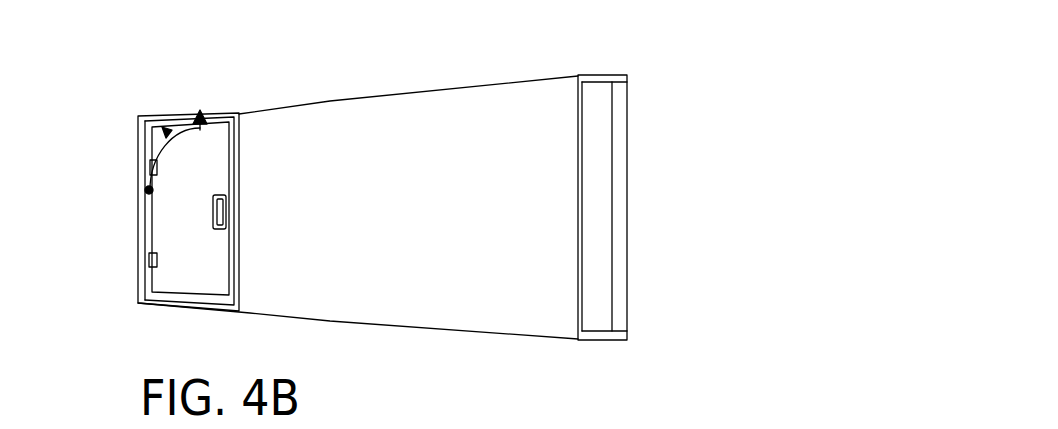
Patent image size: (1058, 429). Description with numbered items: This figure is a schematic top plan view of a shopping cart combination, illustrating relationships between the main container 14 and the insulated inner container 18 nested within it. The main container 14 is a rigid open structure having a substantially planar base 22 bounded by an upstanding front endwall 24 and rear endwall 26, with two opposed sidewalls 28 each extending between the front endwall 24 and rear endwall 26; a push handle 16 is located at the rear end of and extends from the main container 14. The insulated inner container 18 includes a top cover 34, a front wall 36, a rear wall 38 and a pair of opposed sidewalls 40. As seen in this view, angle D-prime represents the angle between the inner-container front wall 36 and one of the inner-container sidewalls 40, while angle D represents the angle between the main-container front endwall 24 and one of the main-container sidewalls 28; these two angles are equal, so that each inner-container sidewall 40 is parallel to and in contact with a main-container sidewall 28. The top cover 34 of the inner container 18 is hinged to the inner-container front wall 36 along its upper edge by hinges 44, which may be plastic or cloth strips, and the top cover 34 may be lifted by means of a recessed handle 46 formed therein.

The main container 14 is at (359, 219).
The push handle 16 is at (628, 137).
The insulated inner container 18 is at (219, 204).
The base 22 is at (418, 295).
The front endwall 24 is at (145, 221).
The rear endwall 26 is at (582, 243).
The sidewalls 28 is at (383, 92).
The top cover 34 is at (221, 258).
The front wall 36 is at (140, 233).
The rear wall 38 is at (241, 268).
The sidewalls 40 is at (211, 115).
The hinges 44 is at (160, 265).
The recessed handle 46 is at (222, 193).